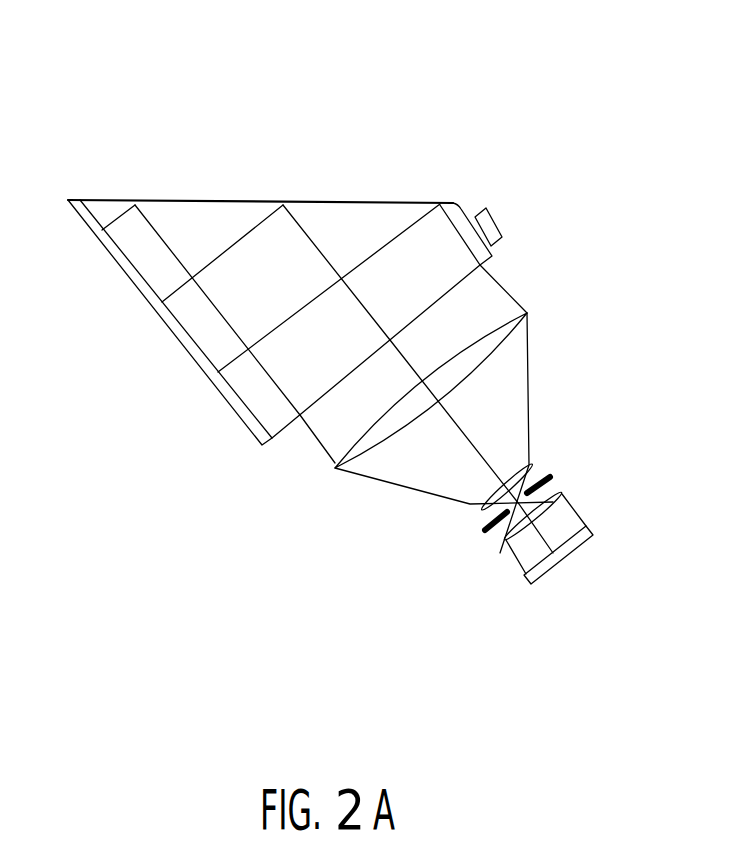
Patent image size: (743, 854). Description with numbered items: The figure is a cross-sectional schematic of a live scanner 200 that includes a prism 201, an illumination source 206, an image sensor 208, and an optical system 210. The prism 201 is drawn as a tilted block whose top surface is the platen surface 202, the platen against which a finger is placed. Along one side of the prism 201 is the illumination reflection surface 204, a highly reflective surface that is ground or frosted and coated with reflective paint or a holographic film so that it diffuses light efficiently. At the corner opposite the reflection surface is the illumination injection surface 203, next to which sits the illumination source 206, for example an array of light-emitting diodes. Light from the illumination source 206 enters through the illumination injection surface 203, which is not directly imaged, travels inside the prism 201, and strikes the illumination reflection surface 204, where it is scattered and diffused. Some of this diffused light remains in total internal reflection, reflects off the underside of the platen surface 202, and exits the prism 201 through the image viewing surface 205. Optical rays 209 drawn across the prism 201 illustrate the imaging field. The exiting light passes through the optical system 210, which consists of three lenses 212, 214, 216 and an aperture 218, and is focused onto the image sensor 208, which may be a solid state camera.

The live scanner 200 is at (481, 106).
The prism 201 is at (286, 294).
The platen surface 202 is at (168, 200).
The illumination injection surface 203 is at (462, 208).
The illumination reflection surface 204 is at (203, 360).
The image viewing surface 205 is at (412, 332).
The illumination source 206 is at (497, 222).
The image sensor 208 is at (568, 565).
The optical rays 209 is at (153, 227).
The optical system 210 is at (543, 292).
The lens 212 is at (333, 472).
The lens 214 is at (483, 511).
The lens 216 is at (507, 538).
The aperture 218 is at (505, 522).